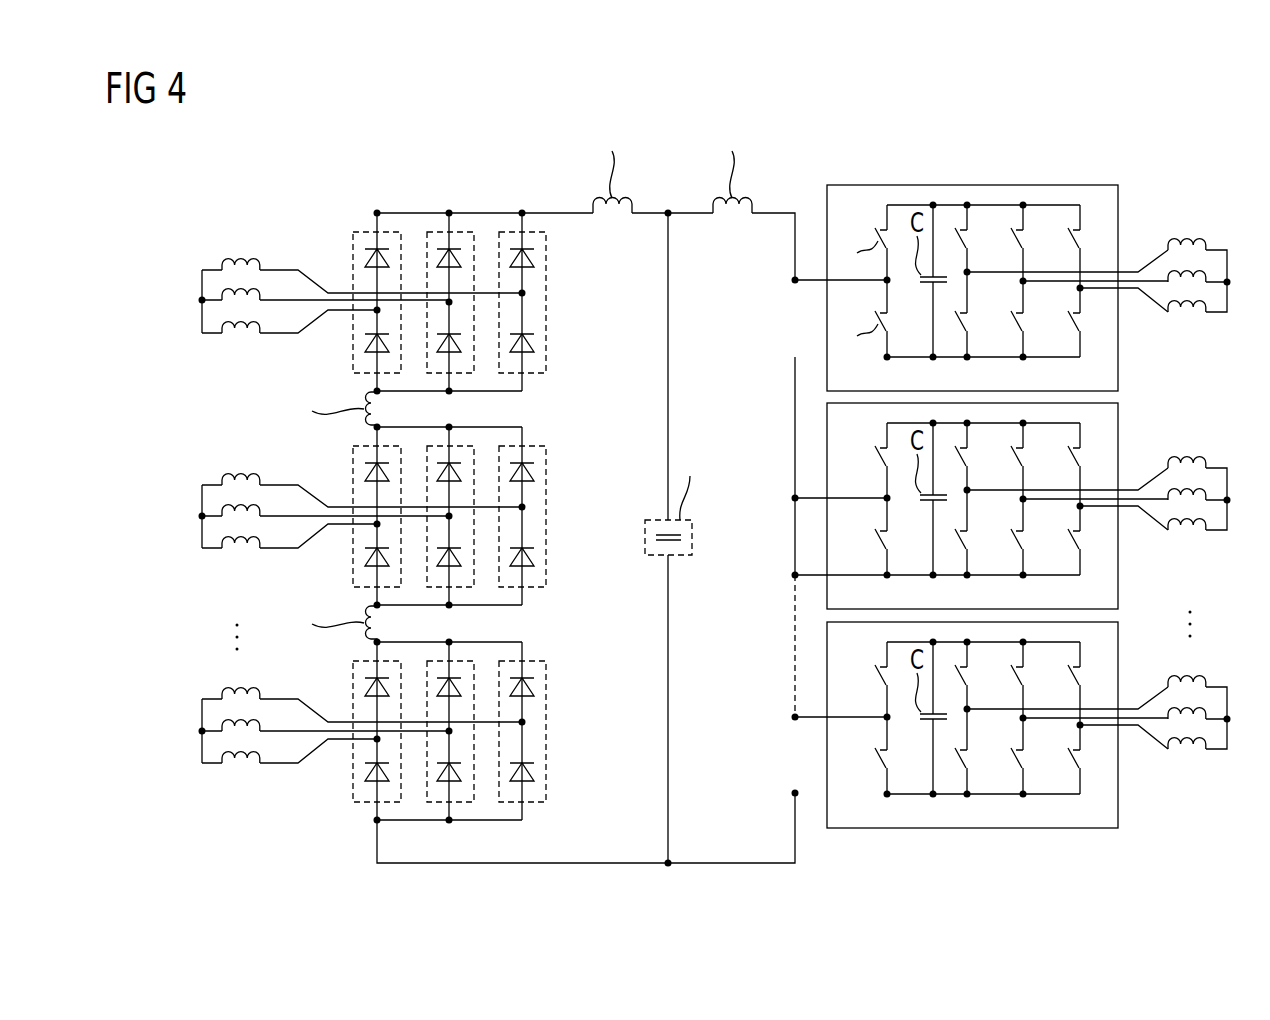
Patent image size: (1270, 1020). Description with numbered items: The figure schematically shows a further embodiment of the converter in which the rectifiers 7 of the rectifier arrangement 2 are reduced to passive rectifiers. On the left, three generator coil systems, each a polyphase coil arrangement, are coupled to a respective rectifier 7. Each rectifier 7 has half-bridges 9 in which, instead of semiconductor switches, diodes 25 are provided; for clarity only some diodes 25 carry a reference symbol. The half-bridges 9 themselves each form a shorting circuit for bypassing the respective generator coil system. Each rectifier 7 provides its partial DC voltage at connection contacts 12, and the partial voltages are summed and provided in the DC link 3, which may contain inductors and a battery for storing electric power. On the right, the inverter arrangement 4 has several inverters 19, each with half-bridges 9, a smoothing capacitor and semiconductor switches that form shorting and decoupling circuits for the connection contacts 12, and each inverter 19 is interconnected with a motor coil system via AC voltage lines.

The rectifier arrangement 2 is at (498, 156).
The DC link 3 is at (667, 142).
The inverter arrangement 4 is at (962, 139).
The rectifier 7 is at (574, 295).
The half-bridge 9 is at (389, 231).
The connection contact 12 is at (377, 212).
The inverter 19 is at (1071, 185).
The diode 25 is at (364, 258).